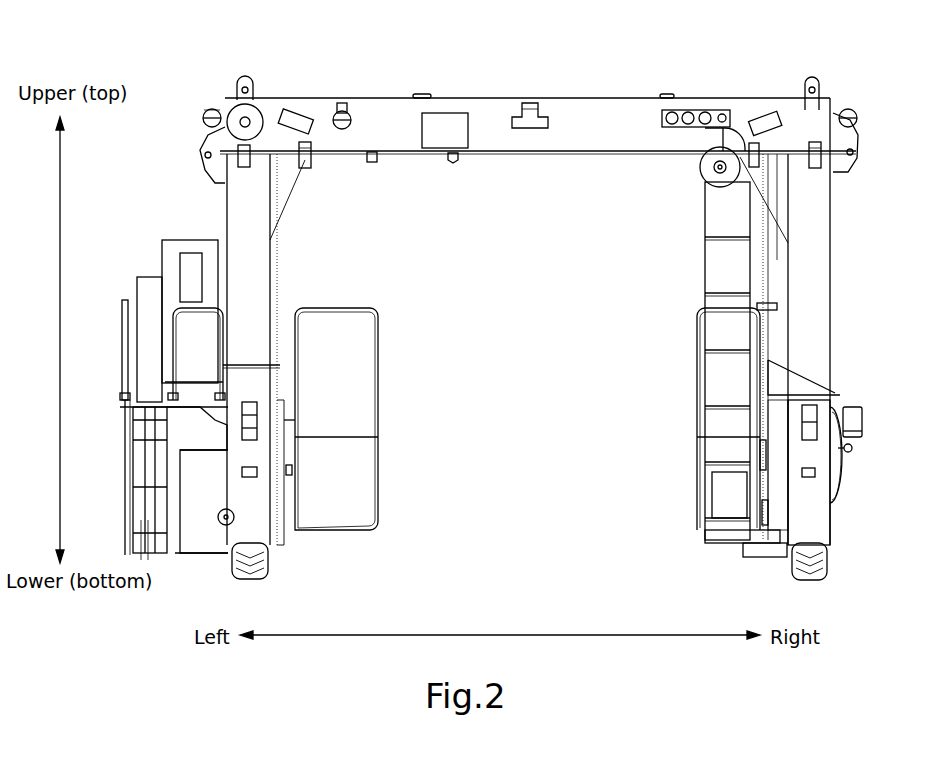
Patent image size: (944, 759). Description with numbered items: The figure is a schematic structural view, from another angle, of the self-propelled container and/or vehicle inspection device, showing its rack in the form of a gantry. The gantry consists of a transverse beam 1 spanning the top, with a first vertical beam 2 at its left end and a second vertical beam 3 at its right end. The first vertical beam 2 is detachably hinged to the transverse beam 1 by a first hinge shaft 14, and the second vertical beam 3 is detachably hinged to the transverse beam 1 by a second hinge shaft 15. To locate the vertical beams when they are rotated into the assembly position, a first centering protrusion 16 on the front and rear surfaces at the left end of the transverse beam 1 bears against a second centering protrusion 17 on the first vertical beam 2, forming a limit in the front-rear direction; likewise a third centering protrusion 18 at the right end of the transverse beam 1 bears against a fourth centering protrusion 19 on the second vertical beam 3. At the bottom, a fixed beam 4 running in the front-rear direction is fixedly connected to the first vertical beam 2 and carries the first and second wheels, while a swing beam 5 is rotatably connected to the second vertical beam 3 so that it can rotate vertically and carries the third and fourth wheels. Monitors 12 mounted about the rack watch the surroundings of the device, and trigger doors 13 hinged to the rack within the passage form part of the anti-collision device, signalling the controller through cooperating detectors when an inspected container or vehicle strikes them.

The transverse beam 1 is at (585, 117).
The first vertical beam 2 is at (243, 230).
The second vertical beam 3 is at (803, 262).
The fixed beam 4 is at (248, 498).
The swing beam 5 is at (802, 505).
The monitor 12 is at (210, 118).
The trigger door 13 is at (466, 427).
The first hinge shaft 14 is at (196, 144).
The second hinge shaft 15 is at (866, 145).
The first centering protrusion 16 is at (310, 154).
The second centering protrusion 17 is at (307, 182).
The third centering protrusion 18 is at (815, 152).
The fourth centering protrusion 19 is at (823, 175).